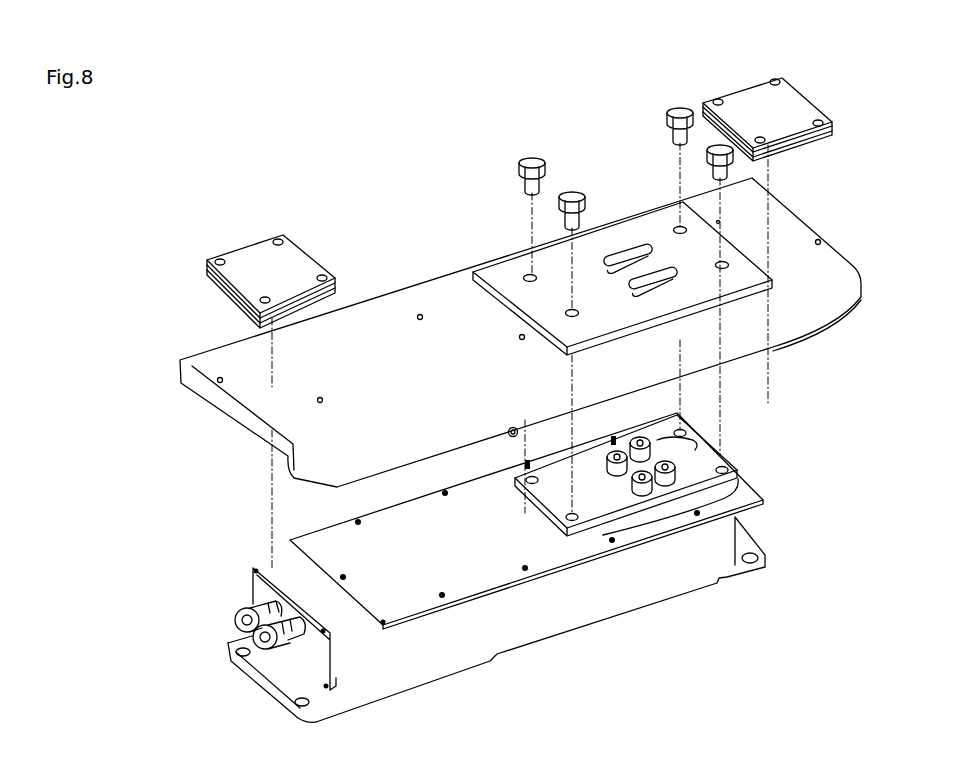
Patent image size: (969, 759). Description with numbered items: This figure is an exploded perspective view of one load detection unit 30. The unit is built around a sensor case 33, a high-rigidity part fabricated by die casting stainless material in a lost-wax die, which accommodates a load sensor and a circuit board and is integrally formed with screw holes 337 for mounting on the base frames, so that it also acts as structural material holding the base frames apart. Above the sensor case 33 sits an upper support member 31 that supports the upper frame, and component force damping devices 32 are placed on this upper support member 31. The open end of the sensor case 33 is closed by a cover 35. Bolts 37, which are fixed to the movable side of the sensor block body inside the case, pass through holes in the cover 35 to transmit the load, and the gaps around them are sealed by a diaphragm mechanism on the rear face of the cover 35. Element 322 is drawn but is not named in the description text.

The load detection unit 30 is at (309, 124).
The upper support member 31 is at (401, 289).
The component force damping device 32 is at (240, 247).
The sensor case 33 is at (553, 634).
The cover 35 is at (332, 525).
The bolts 37 is at (684, 437).
The end plate 322 is at (250, 588).
The screw holes 337 is at (237, 641).